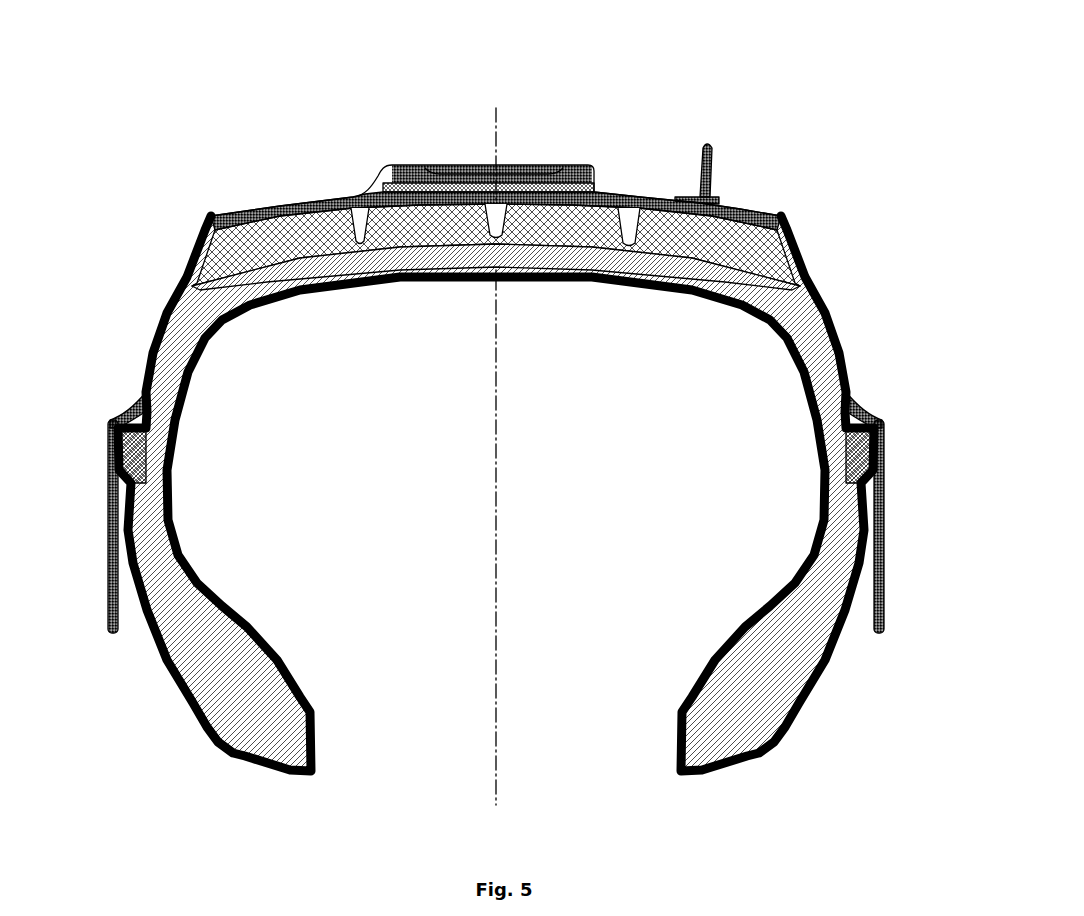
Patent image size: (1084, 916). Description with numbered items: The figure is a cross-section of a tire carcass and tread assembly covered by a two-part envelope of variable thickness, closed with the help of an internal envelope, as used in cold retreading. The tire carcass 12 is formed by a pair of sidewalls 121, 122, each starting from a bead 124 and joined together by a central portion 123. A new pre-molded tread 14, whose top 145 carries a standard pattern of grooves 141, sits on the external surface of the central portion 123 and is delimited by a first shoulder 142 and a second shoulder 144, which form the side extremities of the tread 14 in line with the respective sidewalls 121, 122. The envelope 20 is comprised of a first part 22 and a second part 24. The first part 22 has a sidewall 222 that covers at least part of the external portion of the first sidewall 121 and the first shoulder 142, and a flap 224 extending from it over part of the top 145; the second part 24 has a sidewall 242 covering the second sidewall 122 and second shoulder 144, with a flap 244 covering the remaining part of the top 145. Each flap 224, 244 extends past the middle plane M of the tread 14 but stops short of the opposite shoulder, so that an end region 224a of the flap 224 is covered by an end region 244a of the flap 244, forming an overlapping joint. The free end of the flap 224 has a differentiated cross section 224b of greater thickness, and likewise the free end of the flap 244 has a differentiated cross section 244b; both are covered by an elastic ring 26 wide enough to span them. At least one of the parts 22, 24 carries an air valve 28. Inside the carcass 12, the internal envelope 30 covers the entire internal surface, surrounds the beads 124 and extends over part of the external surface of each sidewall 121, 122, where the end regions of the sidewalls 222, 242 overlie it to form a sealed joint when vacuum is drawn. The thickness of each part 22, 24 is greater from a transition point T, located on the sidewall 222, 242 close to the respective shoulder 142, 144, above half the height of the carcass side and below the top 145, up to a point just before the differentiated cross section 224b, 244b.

The tire carcass 12 is at (210, 644).
The pre-molded tread 14 is at (275, 235).
The envelope 20 is at (128, 368).
The first part of the envelope 22 is at (885, 545).
The second part of the envelope 24 is at (110, 552).
The elastic ring 26 is at (533, 167).
The air valve 28 is at (711, 143).
The internal envelope 30 is at (703, 286).
The first sidewall of the carcass 121 is at (842, 465).
The second sidewall of the carcass 122 is at (152, 463).
The central portion of the carcass 123 is at (462, 256).
The bead 124 is at (290, 744).
The grooves 141 is at (360, 240).
The first shoulder of the tread 142 is at (793, 258).
The second shoulder of the tread 144 is at (207, 253).
The top of the tread 145 is at (243, 222).
The sidewall of the first part 222 is at (807, 277).
The flap of the first part 224 is at (658, 202).
The end region of the flap of the first part 224a is at (525, 193).
The differentiated cross section of the first flap 224b is at (402, 192).
The sidewall of the second part 242 is at (187, 275).
The flap of the second part 244 is at (303, 208).
The end region of the flap of the second part 244a is at (445, 180).
The differentiated cross section of the second flap 244b is at (572, 173).
The transition point T is at (167, 312).
The middle plane M is at (496, 473).